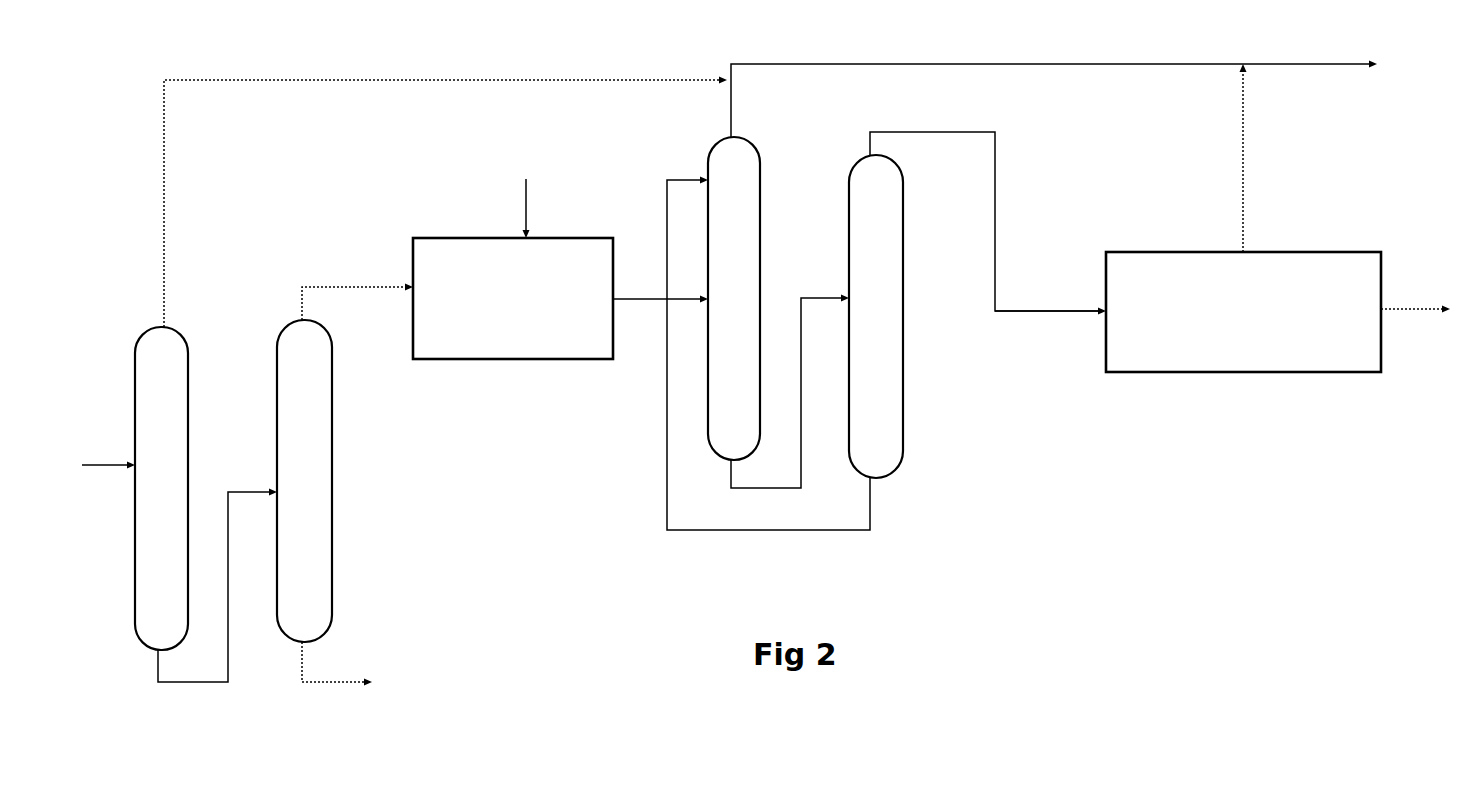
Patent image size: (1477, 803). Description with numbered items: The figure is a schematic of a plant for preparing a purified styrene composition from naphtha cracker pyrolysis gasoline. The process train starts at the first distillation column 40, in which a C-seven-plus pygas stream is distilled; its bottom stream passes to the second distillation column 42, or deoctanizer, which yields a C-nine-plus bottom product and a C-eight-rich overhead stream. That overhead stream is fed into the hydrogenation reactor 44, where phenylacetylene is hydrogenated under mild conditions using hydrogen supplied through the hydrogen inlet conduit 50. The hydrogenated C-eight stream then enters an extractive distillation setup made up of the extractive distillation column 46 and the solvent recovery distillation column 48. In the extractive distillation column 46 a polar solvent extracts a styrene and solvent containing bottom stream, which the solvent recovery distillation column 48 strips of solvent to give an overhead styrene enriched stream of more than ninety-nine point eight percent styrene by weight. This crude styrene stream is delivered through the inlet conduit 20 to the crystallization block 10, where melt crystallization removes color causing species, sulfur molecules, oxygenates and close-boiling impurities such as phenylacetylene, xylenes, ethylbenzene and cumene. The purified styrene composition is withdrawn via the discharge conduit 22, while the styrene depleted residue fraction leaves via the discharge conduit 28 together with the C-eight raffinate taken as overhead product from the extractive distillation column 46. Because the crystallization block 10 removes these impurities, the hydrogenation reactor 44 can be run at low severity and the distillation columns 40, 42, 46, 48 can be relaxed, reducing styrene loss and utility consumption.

The crystallization block 10 is at (1243, 344).
The inlet conduit 20 is at (1047, 342).
The discharge conduit 22 is at (1419, 345).
The discharge conduit 28 is at (1271, 158).
The first distillation column 40 is at (404, 364).
The second distillation column 42 is at (285, 485).
The hydrogenation reactor 44 is at (560, 337).
The extractive distillation column 46 is at (1042, 275).
The solvent recovery distillation column 48 is at (886, 331).
The hydrogen inlet conduit 50 is at (555, 188).